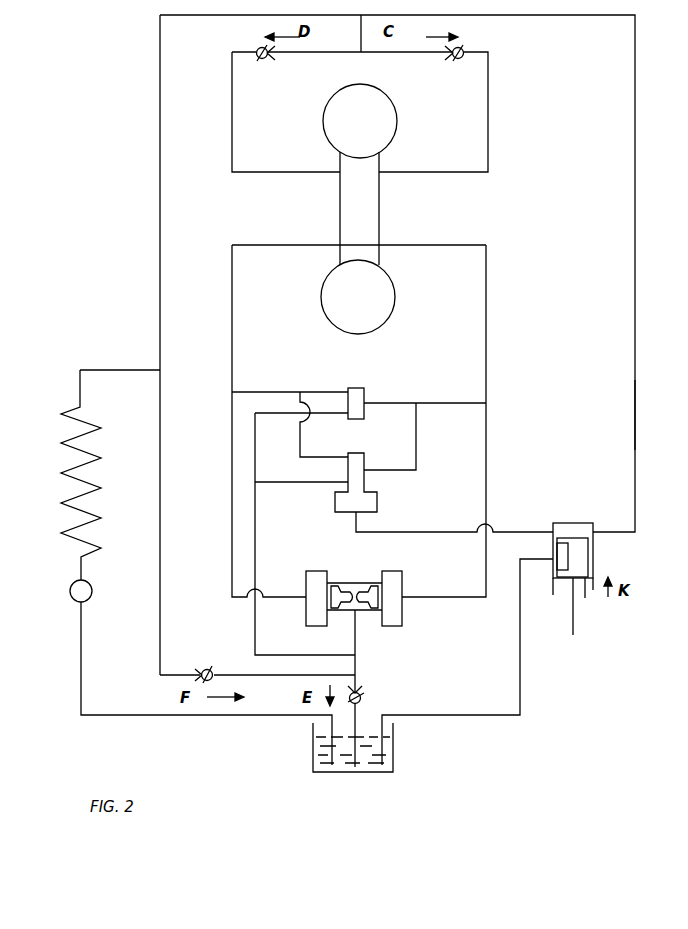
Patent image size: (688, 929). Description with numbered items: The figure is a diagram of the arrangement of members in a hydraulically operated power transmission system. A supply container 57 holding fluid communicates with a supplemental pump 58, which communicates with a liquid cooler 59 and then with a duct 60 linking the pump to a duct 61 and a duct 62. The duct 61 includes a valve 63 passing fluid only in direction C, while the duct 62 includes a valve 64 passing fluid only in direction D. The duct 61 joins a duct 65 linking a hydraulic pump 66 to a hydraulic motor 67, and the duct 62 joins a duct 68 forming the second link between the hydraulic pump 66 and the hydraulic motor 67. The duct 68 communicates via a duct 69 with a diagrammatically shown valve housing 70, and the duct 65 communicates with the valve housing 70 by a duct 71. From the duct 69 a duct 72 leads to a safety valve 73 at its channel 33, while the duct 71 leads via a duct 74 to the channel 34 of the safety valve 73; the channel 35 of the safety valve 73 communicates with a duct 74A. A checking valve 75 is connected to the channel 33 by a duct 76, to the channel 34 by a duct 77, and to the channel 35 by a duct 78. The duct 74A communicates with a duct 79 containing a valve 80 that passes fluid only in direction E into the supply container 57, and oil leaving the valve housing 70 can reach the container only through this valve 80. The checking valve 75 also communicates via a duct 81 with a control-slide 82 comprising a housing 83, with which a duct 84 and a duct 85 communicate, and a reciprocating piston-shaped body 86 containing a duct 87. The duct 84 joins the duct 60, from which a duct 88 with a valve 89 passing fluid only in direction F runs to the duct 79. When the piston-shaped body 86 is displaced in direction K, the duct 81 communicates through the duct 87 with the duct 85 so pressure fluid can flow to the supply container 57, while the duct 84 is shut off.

The channel 33 is at (321, 390).
The channel 34 is at (392, 403).
The channel 35 is at (256, 462).
The supply container 57 is at (316, 756).
The supplemental pump 58 is at (92, 592).
The liquid cooler 59 is at (90, 521).
The duct 60 is at (159, 313).
The duct 61 is at (488, 127).
The duct 62 is at (232, 126).
The valve 63 is at (456, 60).
The valve 64 is at (266, 60).
The duct 65 is at (380, 211).
The hydraulic pump 66 is at (397, 126).
The hydraulic motor 67 is at (395, 300).
The duct 68 is at (340, 212).
The duct 69 is at (232, 334).
The valve housing 70 is at (340, 581).
The duct 71 is at (486, 352).
The duct 72 is at (250, 392).
The safety valve 73 is at (355, 388).
The duct 74 is at (462, 403).
The duct 74A is at (258, 566).
The checking valve 75 is at (378, 501).
The duct 76 is at (301, 440).
The duct 77 is at (417, 447).
The duct 78 is at (298, 481).
The duct 79 is at (355, 651).
The valve 80 is at (361, 697).
The duct 81 is at (432, 532).
The control-slide 82 is at (630, 562).
The housing 83 is at (577, 523).
The duct 84 is at (635, 413).
The duct 85 is at (520, 680).
The piston-shaped body 86 is at (578, 606).
The duct 87 is at (573, 552).
The duct 88 is at (160, 545).
The valve 89 is at (205, 670).